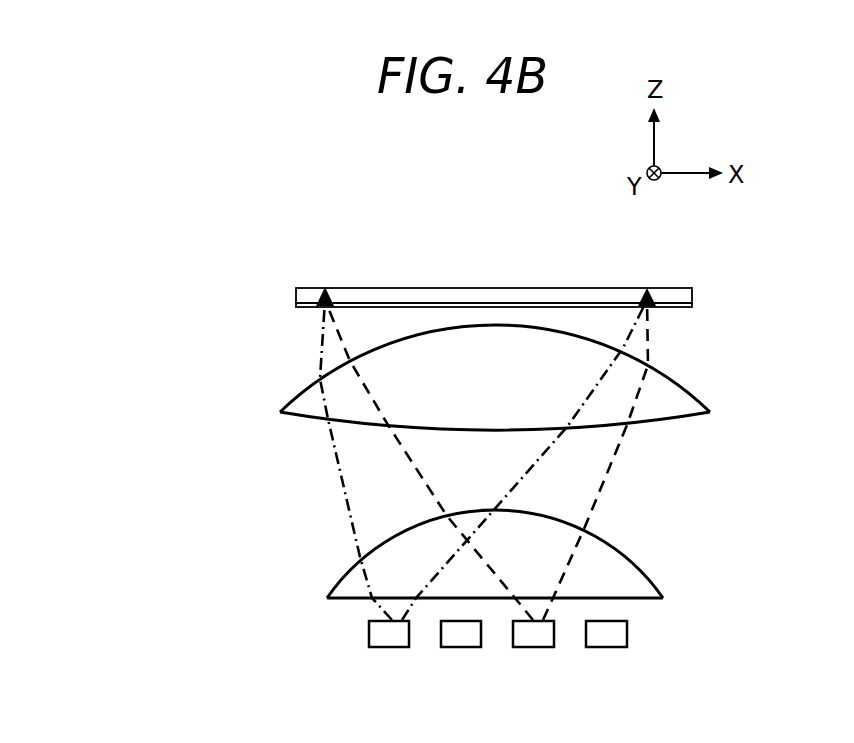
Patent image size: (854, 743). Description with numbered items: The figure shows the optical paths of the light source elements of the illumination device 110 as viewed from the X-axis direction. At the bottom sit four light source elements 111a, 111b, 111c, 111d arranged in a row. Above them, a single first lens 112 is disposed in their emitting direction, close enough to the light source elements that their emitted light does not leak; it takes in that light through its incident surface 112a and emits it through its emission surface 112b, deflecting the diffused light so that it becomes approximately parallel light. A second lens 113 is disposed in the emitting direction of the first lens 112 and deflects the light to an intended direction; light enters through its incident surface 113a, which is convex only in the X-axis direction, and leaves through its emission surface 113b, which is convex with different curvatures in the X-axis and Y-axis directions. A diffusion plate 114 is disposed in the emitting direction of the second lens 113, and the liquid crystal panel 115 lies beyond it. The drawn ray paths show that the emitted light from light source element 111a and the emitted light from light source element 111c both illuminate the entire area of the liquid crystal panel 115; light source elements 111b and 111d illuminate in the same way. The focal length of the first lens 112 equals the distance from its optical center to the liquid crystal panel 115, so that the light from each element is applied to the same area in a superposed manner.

The illumination device 110 is at (139, 473).
The light source element 111a is at (383, 647).
The light source element 111b is at (470, 647).
The light source element 111c is at (523, 647).
The light source element 111d is at (608, 647).
The first lens 112 is at (330, 595).
The incident surface 112a is at (657, 600).
The emission surface 112b is at (648, 583).
The second lens 113 is at (282, 410).
The incident surface 113a is at (687, 420).
The emission surface 113b is at (700, 402).
The diffusion plate 114 is at (296, 303).
The liquid crystal panel 115 is at (296, 293).